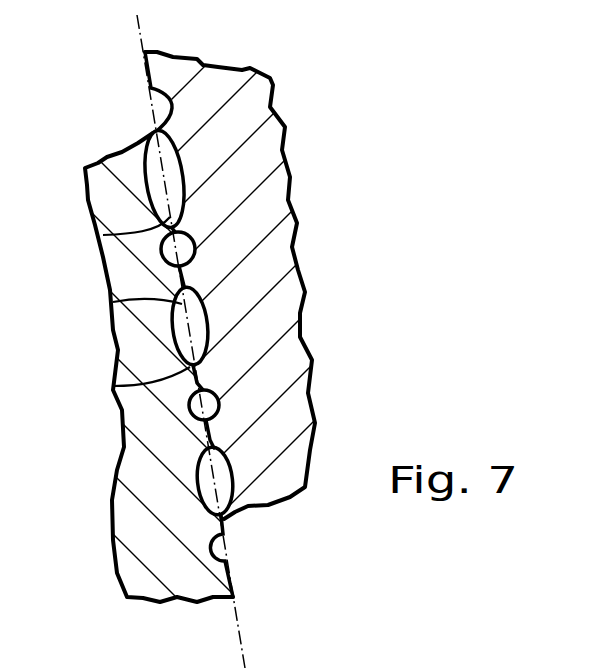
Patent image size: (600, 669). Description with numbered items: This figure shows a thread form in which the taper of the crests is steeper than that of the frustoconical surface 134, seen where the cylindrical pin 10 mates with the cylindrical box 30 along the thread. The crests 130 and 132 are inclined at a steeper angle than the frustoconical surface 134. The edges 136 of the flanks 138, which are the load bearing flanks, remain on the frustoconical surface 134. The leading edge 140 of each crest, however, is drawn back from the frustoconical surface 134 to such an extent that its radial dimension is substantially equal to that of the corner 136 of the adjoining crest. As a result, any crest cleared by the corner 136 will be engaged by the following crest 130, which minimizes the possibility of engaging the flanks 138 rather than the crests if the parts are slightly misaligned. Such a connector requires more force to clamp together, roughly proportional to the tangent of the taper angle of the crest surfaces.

The cylindrical pin 10 is at (297, 311).
The cylindrical box 30 is at (138, 448).
The crest 130 is at (171, 201).
The crest 132 is at (103, 235).
The frustoconical surface 134 is at (139, 30).
The edge of flank 136 is at (160, 125).
The flank 138 is at (153, 103).
The leading edge of crest 140 is at (193, 240).